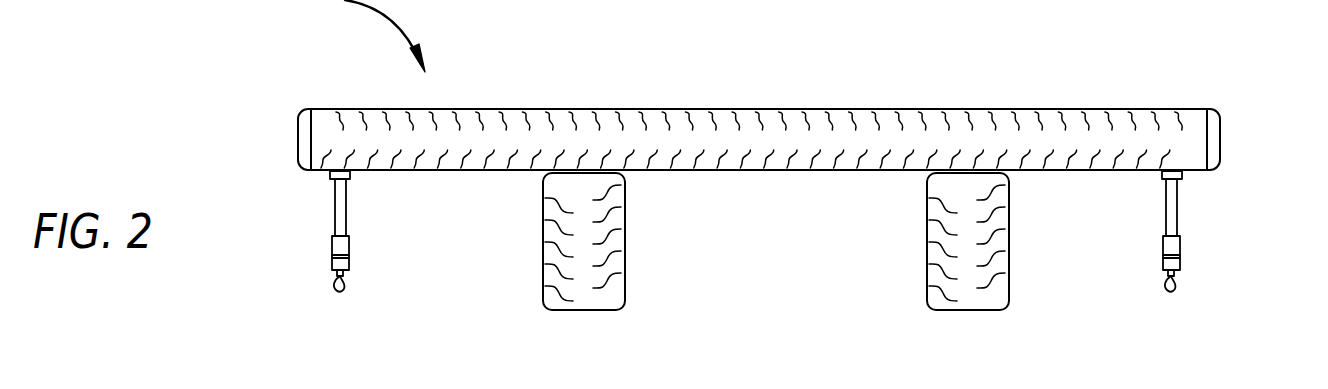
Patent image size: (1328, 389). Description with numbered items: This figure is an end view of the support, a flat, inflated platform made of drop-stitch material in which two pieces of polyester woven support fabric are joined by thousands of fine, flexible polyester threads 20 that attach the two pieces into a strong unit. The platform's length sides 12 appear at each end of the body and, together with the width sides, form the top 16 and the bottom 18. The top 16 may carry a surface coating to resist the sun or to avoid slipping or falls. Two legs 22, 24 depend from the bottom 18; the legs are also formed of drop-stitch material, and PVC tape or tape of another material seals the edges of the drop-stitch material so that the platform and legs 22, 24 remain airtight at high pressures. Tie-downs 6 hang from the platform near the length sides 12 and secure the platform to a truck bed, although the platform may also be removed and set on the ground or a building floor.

The tie-downs 6 is at (330, 213).
The length sides 12 is at (298, 142).
The top 16 is at (922, 112).
The bottom 18 is at (758, 171).
The polyester threads 20 is at (750, 136).
The leg 22 is at (616, 288).
The leg 24 is at (1001, 288).